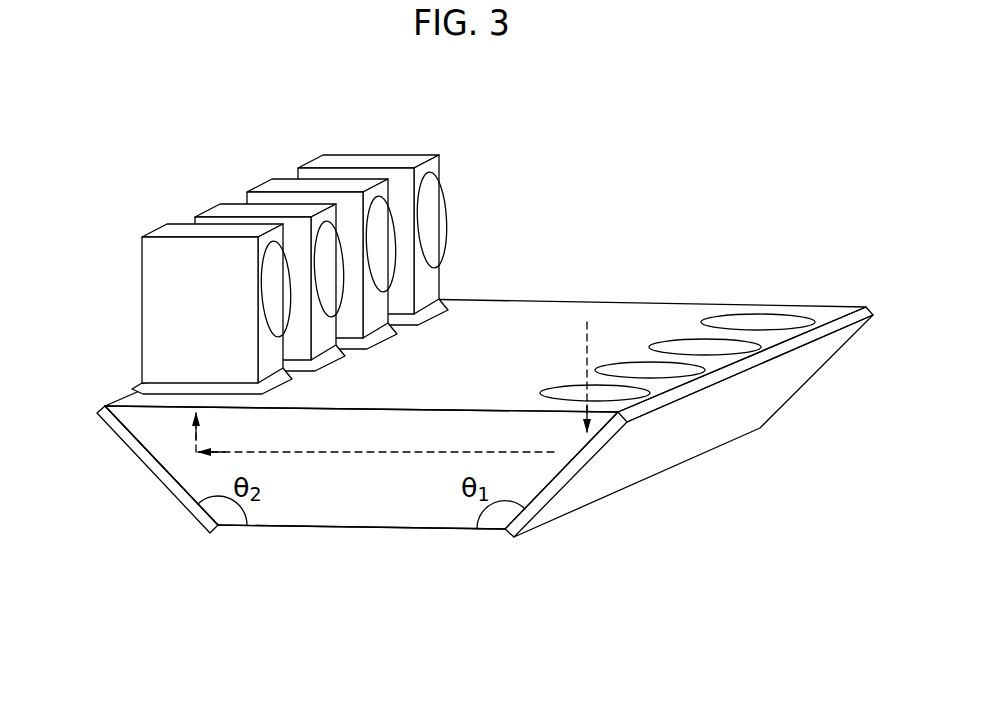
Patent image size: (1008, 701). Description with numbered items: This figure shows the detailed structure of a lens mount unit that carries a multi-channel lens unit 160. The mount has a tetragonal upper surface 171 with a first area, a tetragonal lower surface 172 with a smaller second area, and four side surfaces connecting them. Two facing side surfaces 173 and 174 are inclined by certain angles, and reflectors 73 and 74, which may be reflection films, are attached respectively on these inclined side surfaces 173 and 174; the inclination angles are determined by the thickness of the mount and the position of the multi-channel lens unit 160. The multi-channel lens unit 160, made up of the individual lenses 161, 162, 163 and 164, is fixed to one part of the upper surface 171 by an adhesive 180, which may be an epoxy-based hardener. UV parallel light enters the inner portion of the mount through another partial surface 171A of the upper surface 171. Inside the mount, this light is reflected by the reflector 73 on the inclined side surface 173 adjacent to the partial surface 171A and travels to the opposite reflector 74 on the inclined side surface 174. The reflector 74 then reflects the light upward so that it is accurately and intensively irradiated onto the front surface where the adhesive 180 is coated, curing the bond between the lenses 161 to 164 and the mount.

The multi-channel lens unit 160 is at (255, 229).
The lens of the multi-channel lens unit 161 is at (204, 271).
The lens of the multi-channel lens unit 162 is at (230, 200).
The lens of the multi-channel lens unit 163 is at (277, 178).
The lens of the multi-channel lens unit 164 is at (330, 155).
The upper surface 171 is at (522, 316).
The partial surface of the upper surface 171A is at (742, 321).
The lower surface 172 is at (368, 512).
The inclined side surface 173 is at (541, 503).
The inclined side surface 174 is at (183, 504).
The reflector 73 is at (710, 431).
The reflector 74 is at (143, 460).
The adhesive 180 is at (133, 388).